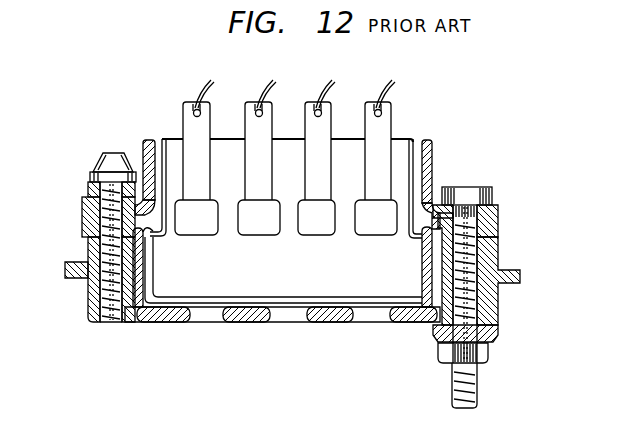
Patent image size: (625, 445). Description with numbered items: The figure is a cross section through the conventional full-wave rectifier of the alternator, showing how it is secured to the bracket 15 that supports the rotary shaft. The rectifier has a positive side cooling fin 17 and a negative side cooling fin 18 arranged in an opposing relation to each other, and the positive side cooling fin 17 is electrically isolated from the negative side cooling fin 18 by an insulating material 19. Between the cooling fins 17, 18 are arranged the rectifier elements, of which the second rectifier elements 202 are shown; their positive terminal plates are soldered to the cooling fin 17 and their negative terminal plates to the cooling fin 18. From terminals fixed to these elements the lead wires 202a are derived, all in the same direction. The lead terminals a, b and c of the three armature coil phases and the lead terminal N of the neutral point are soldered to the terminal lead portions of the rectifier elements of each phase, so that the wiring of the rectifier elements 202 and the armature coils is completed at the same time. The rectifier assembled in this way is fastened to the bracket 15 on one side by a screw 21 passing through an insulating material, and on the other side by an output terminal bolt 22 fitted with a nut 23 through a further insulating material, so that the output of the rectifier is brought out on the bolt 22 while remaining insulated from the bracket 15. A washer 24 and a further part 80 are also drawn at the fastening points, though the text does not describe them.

The bracket 15 is at (157, 327).
The cooling fin 17 is at (432, 148).
The cooling fin 18 is at (400, 147).
The lead wire 202a is at (192, 142).
The lead terminal of armature coil a is at (196, 109).
The lead terminal of armature coil b is at (258, 109).
The lead terminal of neutral point N is at (325, 112).
The lead terminal of armature coil c is at (385, 112).
The second rectifier element 202 is at (208, 235).
The screw 21 is at (113, 153).
The washer 80 is at (88, 192).
The insulating material 19 is at (82, 220).
The output terminal bolt 22 is at (478, 187).
The washer 24 is at (498, 332).
The nut 23 is at (488, 352).